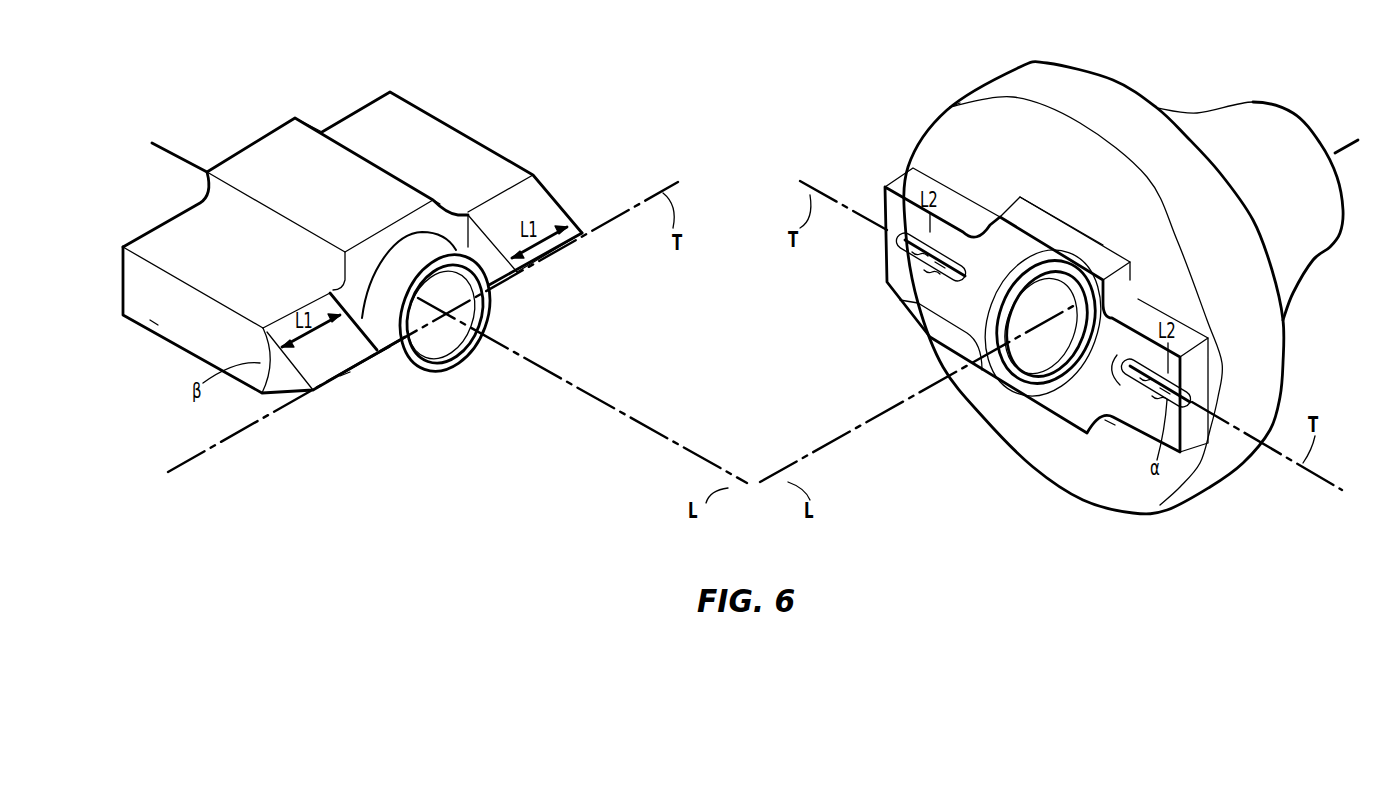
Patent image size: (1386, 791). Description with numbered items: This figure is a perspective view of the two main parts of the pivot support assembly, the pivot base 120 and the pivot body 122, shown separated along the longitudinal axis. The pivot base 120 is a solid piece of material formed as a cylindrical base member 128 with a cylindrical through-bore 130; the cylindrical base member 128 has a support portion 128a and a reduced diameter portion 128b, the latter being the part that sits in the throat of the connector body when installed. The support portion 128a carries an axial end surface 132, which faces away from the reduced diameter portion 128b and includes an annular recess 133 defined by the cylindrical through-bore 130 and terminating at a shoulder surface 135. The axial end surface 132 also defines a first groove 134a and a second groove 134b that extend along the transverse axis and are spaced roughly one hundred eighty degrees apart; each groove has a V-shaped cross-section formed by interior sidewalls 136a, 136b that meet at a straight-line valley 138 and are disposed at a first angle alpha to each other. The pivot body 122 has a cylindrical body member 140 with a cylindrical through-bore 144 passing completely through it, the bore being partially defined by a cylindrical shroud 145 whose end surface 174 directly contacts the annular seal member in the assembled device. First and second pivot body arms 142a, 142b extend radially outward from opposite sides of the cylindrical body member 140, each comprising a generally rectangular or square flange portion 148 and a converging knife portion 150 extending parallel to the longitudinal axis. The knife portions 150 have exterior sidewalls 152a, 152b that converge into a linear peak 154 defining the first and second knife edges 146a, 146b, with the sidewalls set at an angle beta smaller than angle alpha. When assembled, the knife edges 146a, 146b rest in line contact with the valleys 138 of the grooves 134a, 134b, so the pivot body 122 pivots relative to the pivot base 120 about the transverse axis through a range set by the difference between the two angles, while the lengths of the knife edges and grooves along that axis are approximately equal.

The pivot base 120 is at (1020, 60).
The pivot body 122 is at (410, 88).
The cylindrical base member 128 is at (1110, 92).
The support portion 128a is at (997, 90).
The reduced diameter portion 128b is at (1220, 118).
The cylindrical through-bore 130 is at (1017, 380).
The axial end surface 132 is at (1112, 318).
The annular recess 133 is at (1027, 240).
The first groove 134a is at (1120, 418).
The second groove 134b is at (915, 298).
The shoulder surface 135 is at (963, 333).
The interior sidewall 136a is at (905, 268).
The interior sidewall 136b is at (895, 250).
The valley 138 is at (935, 268).
The cylindrical body member 140 is at (282, 142).
The first pivot body arm 142a is at (182, 332).
The second pivot body arm 142b is at (495, 158).
The cylindrical through-bore 144 is at (437, 360).
The cylindrical shroud 145 is at (450, 360).
The first knife edge 146a is at (345, 375).
The second knife edge 146b is at (560, 255).
The flange portion 148 is at (453, 140).
The knife portion 150 is at (533, 205).
The exterior sidewall 152a is at (498, 282).
The exterior sidewall 152b is at (547, 190).
The linear peak 154 is at (329, 381).
The end surface 174 is at (480, 348).